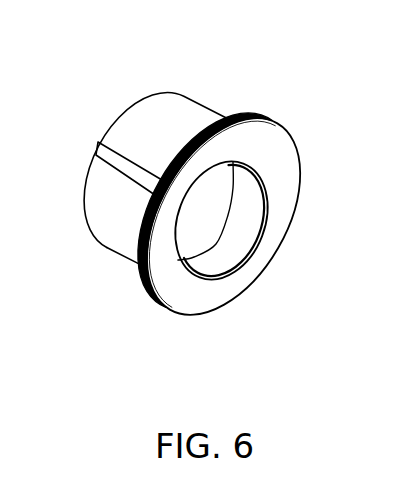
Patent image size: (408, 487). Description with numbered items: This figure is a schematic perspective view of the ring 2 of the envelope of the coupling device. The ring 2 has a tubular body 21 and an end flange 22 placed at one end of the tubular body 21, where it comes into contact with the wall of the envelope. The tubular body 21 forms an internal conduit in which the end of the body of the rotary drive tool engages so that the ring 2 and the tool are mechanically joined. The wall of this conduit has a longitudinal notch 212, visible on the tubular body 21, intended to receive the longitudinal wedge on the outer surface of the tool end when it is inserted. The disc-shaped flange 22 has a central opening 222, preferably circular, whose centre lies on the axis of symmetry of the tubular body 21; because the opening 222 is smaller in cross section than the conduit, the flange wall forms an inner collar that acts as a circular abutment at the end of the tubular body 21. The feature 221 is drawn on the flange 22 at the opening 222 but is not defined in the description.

The bushing 2 is at (115, 85).
The sleeve body 21 is at (112, 235).
The positioning slot 212 is at (193, 115).
The flange 22 is at (275, 137).
The through hole 221 is at (218, 278).
The inner wall of through hole 222 is at (239, 220).